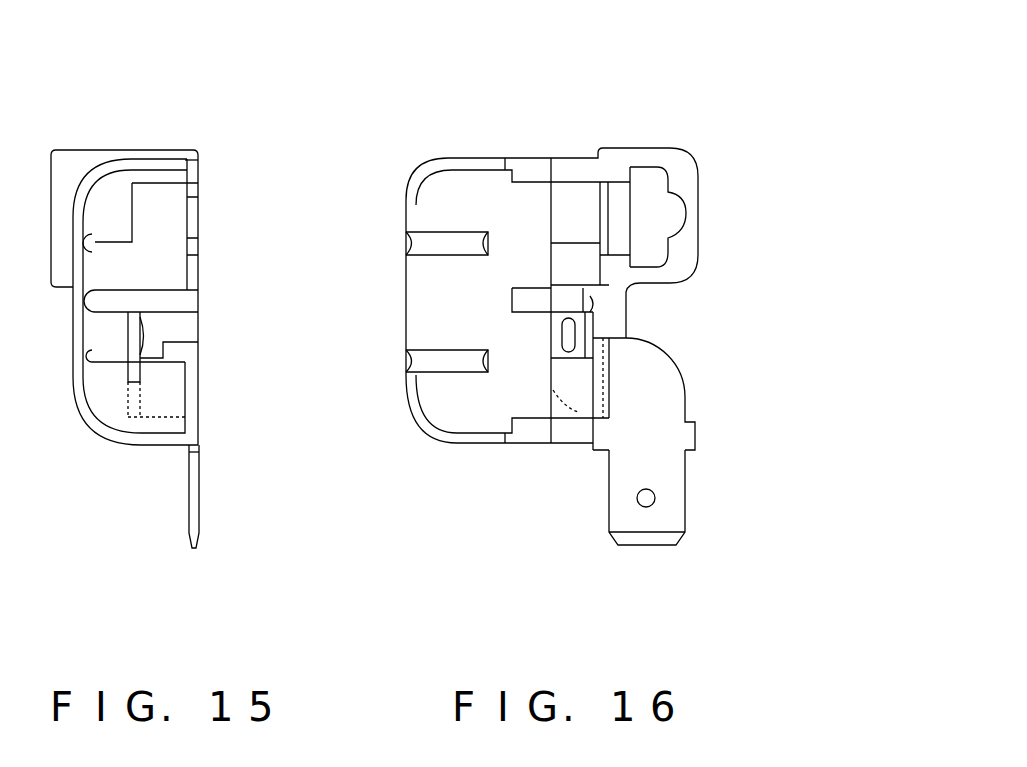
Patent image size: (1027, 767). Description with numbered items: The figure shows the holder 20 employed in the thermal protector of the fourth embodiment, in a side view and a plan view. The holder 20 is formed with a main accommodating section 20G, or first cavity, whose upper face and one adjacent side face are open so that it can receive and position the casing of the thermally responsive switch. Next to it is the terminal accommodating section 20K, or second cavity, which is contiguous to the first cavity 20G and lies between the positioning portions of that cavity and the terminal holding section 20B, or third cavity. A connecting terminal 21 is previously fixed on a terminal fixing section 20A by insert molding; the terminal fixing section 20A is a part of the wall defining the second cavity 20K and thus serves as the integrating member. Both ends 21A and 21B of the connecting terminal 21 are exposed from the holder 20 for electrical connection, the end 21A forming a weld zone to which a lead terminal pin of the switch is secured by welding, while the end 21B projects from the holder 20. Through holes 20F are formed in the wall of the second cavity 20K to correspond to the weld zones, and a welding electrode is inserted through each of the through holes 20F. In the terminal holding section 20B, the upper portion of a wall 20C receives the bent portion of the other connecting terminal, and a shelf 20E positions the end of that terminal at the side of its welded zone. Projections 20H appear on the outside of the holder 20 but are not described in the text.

In FIG. 15, the holder 20 is at (127, 458).
In FIG. 16, the holder 20 is at (712, 160).
In FIG. 15, the terminal fixing section 20A is at (162, 392).
In FIG. 16, the terminal fixing section 20A is at (570, 397).
In FIG. 16, the terminal holding section 20B is at (653, 170).
In FIG. 16, the wall of the terminal holding section 20C is at (590, 157).
In FIG. 15, the shelf 20E is at (115, 221).
In FIG. 16, the shelf 20E is at (570, 221).
In FIG. 16, the through holes 20F is at (600, 273).
In FIG. 16, the main accommodating section 20G is at (442, 313).
In FIG. 16, the positioning pin 20H is at (453, 238).
In FIG. 16, the terminal accommodating section 20K is at (540, 196).
In FIG. 16, the connecting terminal 21 is at (687, 407).
In FIG. 15, the end of the connecting terminal 21A is at (146, 330).
In FIG. 16, the end of the connecting terminal 21A is at (560, 340).
In FIG. 15, the end of the connecting terminal 21B is at (199, 512).
In FIG. 16, the end of the connecting terminal 21B is at (670, 502).